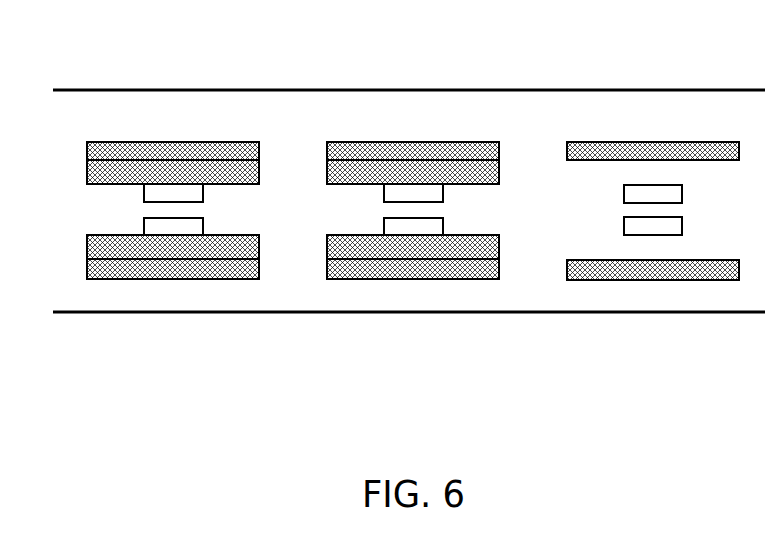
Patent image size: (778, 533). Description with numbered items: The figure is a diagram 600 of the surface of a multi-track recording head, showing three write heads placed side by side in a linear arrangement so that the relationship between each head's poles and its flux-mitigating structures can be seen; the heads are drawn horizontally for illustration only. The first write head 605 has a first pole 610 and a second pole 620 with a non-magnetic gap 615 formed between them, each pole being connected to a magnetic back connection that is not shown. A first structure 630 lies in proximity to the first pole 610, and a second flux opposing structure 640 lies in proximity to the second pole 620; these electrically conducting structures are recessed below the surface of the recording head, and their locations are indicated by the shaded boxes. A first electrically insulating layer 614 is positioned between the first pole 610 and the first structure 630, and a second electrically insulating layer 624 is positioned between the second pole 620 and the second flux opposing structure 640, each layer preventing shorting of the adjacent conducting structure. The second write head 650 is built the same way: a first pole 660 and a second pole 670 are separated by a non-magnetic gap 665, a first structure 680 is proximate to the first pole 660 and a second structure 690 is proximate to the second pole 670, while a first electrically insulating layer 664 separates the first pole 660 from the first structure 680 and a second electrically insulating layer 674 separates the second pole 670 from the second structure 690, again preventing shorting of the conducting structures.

The diagram of a surface of a multi-track recording head 600 is at (642, 390).
The first write head 605 is at (173, 120).
The second write head 650 is at (407, 120).
The first structure 630 is at (87, 149).
The first electrically insulating layer 614 is at (87, 166).
The first pole 610 is at (144, 192).
The non-magnetic gap 615 is at (144, 210).
The second pole 620 is at (144, 225).
The second electrically insulating layer 624 is at (87, 248).
The second flux opposing structure 640 is at (87, 269).
The first structure 680 is at (327, 149).
The first electrically insulating layer 664 is at (327, 166).
The first pole 660 is at (384, 192).
The non-magnetic gap 665 is at (384, 210).
The second pole 670 is at (384, 225).
The second electrically insulating layer 674 is at (327, 248).
The second structure 690 is at (327, 269).